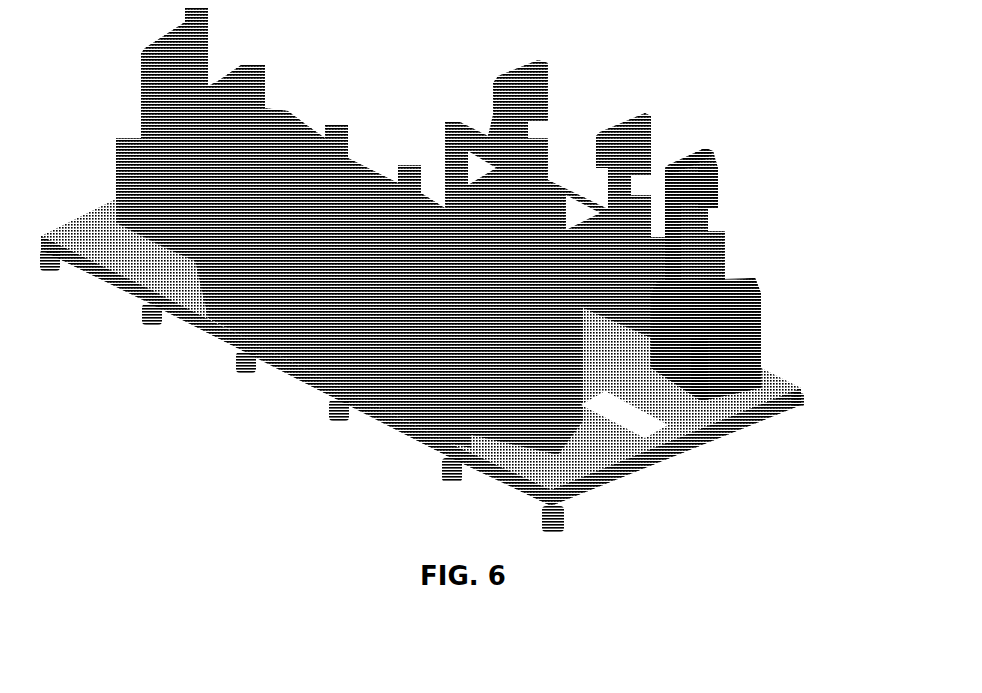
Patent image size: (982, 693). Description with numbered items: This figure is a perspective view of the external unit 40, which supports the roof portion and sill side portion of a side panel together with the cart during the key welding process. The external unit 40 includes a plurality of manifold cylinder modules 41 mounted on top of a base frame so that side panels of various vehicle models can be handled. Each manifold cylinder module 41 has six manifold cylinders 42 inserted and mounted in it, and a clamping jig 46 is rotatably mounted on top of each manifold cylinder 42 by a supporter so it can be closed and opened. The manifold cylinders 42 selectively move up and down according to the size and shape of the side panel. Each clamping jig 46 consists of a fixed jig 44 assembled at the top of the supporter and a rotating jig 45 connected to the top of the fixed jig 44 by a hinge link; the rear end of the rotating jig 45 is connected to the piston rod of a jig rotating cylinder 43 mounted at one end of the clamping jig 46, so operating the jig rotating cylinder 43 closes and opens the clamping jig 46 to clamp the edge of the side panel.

The external unit 40 is at (268, 381).
The manifold cylinder module 41 is at (766, 334).
The manifold cylinder 42 is at (690, 365).
The jig rotating cylinder 43 is at (704, 183).
The fixed jig 44 is at (683, 157).
The rotating jig 45 is at (672, 147).
The clamping jig 46 is at (728, 62).